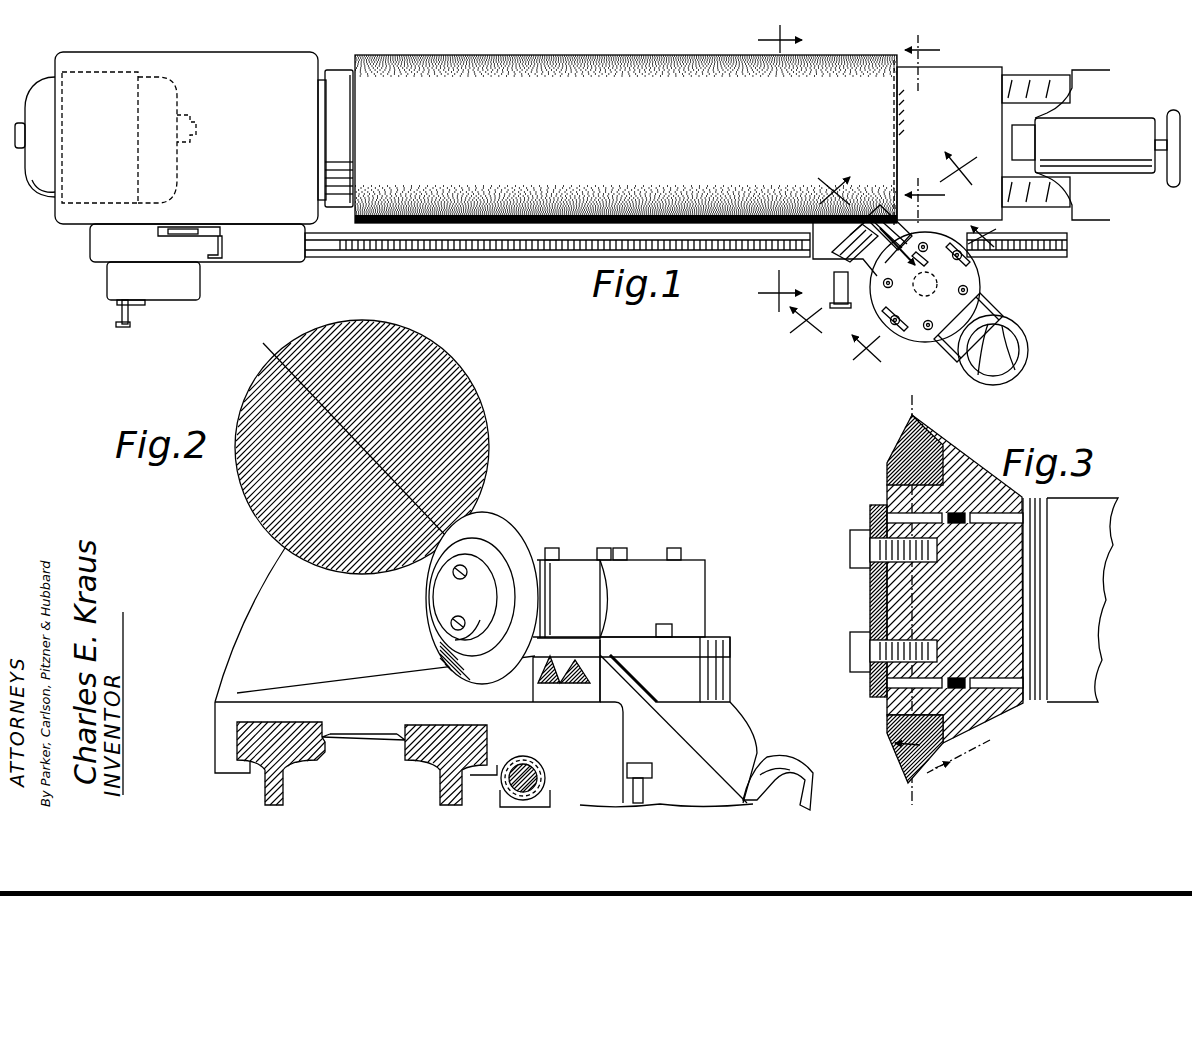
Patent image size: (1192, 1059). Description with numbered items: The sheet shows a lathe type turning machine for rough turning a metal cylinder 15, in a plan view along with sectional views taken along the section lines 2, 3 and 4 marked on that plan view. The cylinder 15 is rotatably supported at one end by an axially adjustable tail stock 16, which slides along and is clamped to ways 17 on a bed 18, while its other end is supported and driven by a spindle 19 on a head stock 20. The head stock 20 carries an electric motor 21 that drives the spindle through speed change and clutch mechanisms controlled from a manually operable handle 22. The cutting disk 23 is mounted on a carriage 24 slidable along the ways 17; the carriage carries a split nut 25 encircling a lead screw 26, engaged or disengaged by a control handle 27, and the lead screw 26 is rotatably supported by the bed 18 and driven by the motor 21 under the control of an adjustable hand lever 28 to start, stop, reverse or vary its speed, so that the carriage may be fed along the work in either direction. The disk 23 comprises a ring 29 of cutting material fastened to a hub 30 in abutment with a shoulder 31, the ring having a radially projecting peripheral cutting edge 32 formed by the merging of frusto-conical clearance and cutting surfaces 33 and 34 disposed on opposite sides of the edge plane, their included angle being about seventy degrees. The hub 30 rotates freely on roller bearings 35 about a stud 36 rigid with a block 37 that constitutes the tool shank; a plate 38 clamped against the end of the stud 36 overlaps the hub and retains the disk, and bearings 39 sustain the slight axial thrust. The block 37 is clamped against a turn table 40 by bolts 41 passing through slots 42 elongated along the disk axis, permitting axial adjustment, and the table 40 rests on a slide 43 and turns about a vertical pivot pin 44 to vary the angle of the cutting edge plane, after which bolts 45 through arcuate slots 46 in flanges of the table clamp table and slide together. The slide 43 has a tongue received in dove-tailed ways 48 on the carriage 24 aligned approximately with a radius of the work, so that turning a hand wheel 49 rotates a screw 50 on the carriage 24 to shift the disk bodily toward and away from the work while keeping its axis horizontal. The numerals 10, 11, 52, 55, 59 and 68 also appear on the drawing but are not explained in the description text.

In FIG. 1, the section line 2— 2 is at (771, 168).
In FIG. 3, the section line 2— 2 is at (942, 754).
In FIG. 1, the section line 3— 3 is at (861, 228).
In FIG. 1, the section line 4— 4 is at (931, 303).
In FIG. 1, the section line 10- 10 is at (936, 127).
In FIG. 1, the section line 11- 11 is at (888, 251).
In FIG. 1, the metal cylinder 15 is at (588, 135).
In FIG. 2, the metal cylinder 15 is at (480, 399).
In FIG. 1, the tail stock 16 is at (1095, 121).
In FIG. 2, the tail stock 16 is at (284, 578).
In FIG. 1, the ways 17 is at (1055, 80).
In FIG. 2, the ways 17 is at (245, 736).
In FIG. 2, the bed 18 is at (270, 793).
In FIG. 1, the spindle 19 is at (336, 74).
In FIG. 1, the head stock 20 is at (257, 62).
In FIG. 1, the electric motor 21 is at (45, 185).
In FIG. 1, the manually operable handle 22 is at (205, 243).
In FIG. 1, the cutting disk 23 is at (810, 246).
In FIG. 2, the cutting disk 23 is at (524, 533).
In FIG. 3, the cutting disk 23 is at (977, 462).
In FIG. 1, the carriage 24 is at (790, 222).
In FIG. 2, the carriage 24 is at (250, 708).
In FIG. 2, the split nut 25 is at (548, 792).
In FIG. 1, the lead screw 26 is at (571, 256).
In FIG. 2, the lead screw 26 is at (540, 771).
In FIG. 1, the control handle 27 is at (850, 300).
In FIG. 2, the control handle 27 is at (653, 800).
In FIG. 1, the adjustable hand lever 28 is at (133, 317).
In FIG. 2, the ring of cutting material 29 is at (450, 645).
In FIG. 3, the ring of cutting material 29 is at (898, 458).
In FIG. 1, the hub 30 is at (846, 272).
In FIG. 2, the hub 30 is at (432, 620).
In FIG. 3, the hub 30 is at (995, 487).
In FIG. 3, the shoulder 31 is at (937, 445).
In FIG. 1, the peripheral cutting edge 32 is at (830, 255).
In FIG. 2, the peripheral cutting edge 32 is at (480, 514).
In FIG. 3, the peripheral cutting edge 32 is at (914, 412).
In FIG. 2, the frusto-conical clearance surface 33 is at (497, 528).
In FIG. 3, the frusto-conical clearance surface 33 is at (898, 760).
In FIG. 3, the frusto-conical cutting surface 34 is at (925, 778).
In FIG. 3, the roller bearings 35 is at (900, 512).
In FIG. 3, the stud 36 is at (872, 606).
In FIG. 1, the block 37 is at (982, 273).
In FIG. 2, the block 37 is at (700, 592).
In FIG. 3, the block 37 is at (1097, 505).
In FIG. 2, the plate 38 is at (446, 598).
In FIG. 3, the plate 38 is at (870, 584).
In FIG. 3, the bearings 39 is at (1038, 582).
In FIG. 2, the turn table 40 is at (714, 646).
In FIG. 1, the bolts 41 is at (985, 300).
In FIG. 2, the bolts 41 is at (674, 550).
In FIG. 1, the slots 42 is at (940, 260).
In FIG. 2, the slide 43 is at (722, 674).
In FIG. 1, the vertical pivot pin 44 is at (925, 287).
In FIG. 1, the bolts 45 is at (893, 316).
In FIG. 2, the bolts 45 is at (664, 624).
In FIG. 1, the arcuate slots 46 is at (939, 325).
In FIG. 2, the dove-tailed ways 48 is at (531, 670).
In FIG. 1, the hand wheel 49 is at (1027, 344).
In FIG. 2, the hand wheel 49 is at (792, 767).
In FIG. 2, the screw 50 is at (564, 681).
In FIG. 1, the roll surface 52 is at (518, 70).
In FIG. 2, the roll surface 52 is at (487, 421).
In FIG. 1, the block 55 is at (984, 70).
In FIG. 1, the shaft 59 is at (900, 64).
In FIG. 2, the shaft 59 is at (556, 566).
In FIG. 3, the center line 68 is at (910, 793).